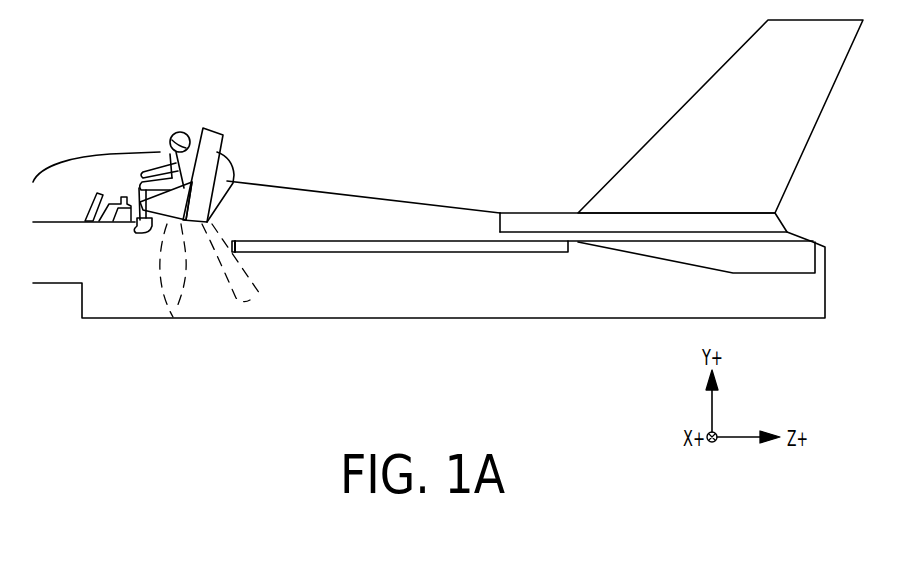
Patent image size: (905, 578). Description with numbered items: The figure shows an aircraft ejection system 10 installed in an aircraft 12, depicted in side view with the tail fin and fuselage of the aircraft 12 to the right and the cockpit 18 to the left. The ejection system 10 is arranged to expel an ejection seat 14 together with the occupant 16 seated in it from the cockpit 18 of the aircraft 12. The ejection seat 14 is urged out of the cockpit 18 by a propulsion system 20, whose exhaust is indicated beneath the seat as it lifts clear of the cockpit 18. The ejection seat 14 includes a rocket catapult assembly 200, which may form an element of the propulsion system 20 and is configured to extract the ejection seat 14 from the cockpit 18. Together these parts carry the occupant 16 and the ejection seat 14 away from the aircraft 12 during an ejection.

The aircraft ejection system 10 is at (360, 96).
The aircraft 12 is at (464, 293).
The ejection seat 14 is at (204, 168).
The occupant 16 is at (171, 137).
The cockpit 18 is at (70, 205).
The propulsion system 20 is at (172, 270).
The rocket catapult assembly 200 is at (210, 169).